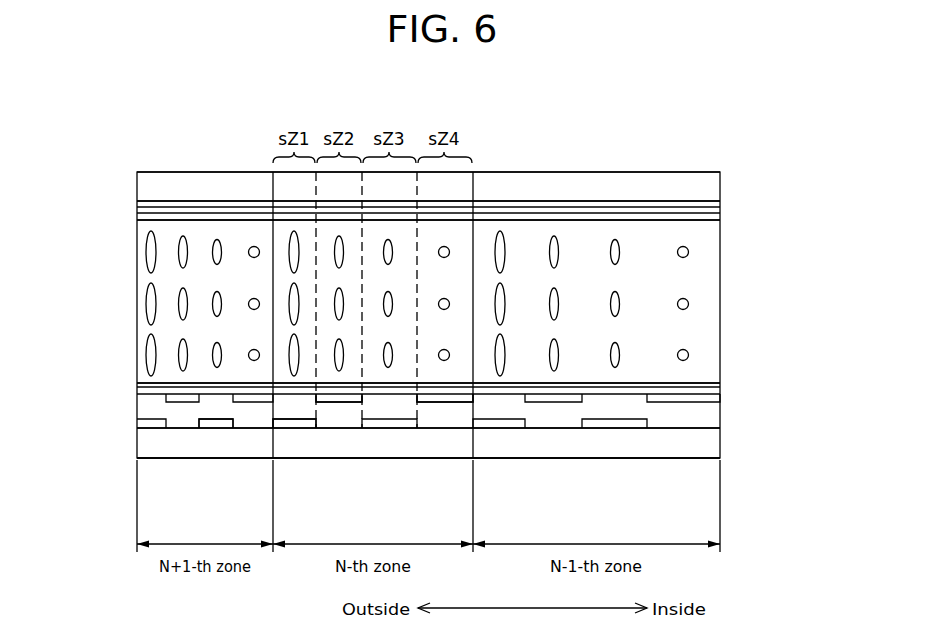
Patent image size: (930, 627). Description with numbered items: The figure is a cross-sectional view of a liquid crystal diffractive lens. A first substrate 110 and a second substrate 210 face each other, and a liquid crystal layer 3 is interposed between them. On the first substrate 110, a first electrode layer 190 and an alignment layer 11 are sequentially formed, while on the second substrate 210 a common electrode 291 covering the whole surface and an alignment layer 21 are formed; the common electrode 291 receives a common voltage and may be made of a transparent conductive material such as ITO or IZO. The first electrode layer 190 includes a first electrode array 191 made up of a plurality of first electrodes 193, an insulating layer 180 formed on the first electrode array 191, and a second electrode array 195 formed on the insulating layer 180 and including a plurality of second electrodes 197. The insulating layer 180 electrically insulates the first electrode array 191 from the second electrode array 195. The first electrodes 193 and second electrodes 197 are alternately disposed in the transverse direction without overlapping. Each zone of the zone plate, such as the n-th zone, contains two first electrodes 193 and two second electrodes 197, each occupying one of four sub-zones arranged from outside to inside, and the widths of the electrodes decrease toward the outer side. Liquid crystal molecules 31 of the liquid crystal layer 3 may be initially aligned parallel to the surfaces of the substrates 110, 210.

The second substrate 210 is at (180, 182).
The liquid crystal molecules 31 is at (292, 241).
The common electrode 291 is at (137, 204).
The alignment layer 21 is at (137, 215).
The liquid crystal layer 3 is at (447, 247).
The alignment layer 11 is at (146, 388).
The second electrode array 195 is at (124, 398).
The first electrode array 191 is at (124, 426).
The first electrode layer 190 is at (415, 456).
The first electrodes 193 is at (221, 425).
The second electrodes 197 is at (445, 399).
The insulating layer 180 is at (551, 415).
The first substrate 110 is at (198, 448).